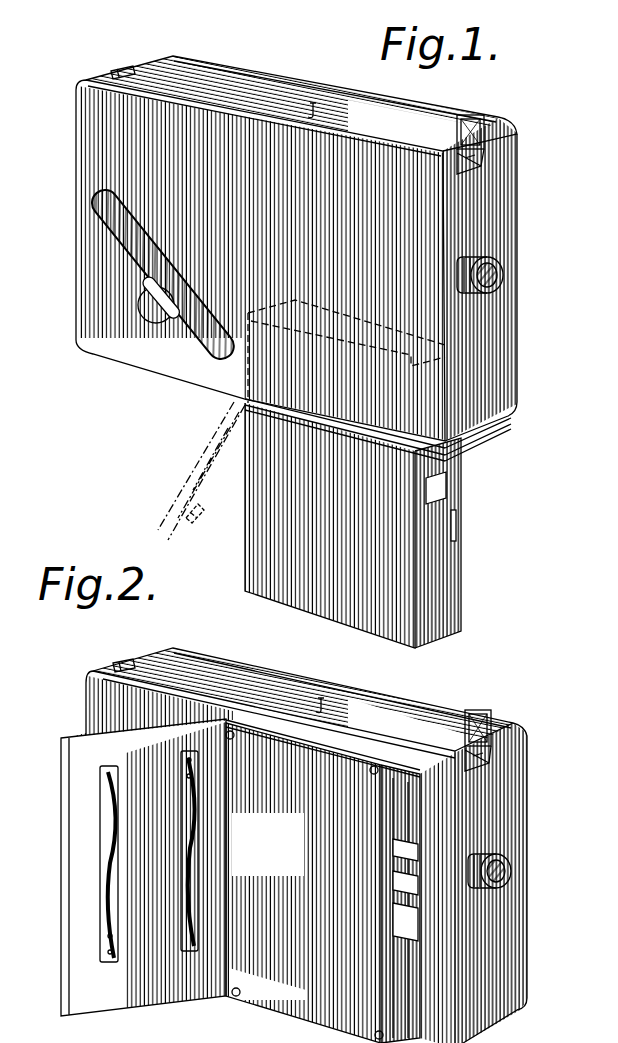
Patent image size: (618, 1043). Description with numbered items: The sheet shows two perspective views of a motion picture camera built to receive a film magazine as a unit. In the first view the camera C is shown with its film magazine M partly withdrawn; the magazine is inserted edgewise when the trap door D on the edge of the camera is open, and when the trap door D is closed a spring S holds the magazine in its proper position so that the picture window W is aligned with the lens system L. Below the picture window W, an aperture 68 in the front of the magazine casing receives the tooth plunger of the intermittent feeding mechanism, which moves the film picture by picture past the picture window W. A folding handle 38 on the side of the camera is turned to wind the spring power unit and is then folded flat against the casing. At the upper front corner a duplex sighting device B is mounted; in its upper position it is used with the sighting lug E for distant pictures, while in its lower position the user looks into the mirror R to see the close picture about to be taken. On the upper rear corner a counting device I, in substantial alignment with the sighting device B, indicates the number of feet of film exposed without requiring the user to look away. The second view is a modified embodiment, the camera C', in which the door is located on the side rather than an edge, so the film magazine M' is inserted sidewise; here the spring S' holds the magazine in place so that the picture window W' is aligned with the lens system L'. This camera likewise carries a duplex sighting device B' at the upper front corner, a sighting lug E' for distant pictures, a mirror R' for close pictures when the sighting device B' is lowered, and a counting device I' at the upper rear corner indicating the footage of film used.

In FIG. 1, the motion picture camera C is at (277, 258).
In FIG. 1, the handle 38 is at (170, 265).
In FIG. 1, the counting device I is at (117, 59).
In FIG. 1, the sighting lug E is at (329, 114).
In FIG. 1, the duplex sighting device B is at (470, 118).
In FIG. 1, the mirror R is at (505, 172).
In FIG. 1, the lens system L is at (507, 285).
In FIG. 1, the film magazine M is at (376, 525).
In FIG. 1, the picture window W is at (468, 488).
In FIG. 1, the aperture 68 is at (449, 520).
In FIG. 1, the trap door D is at (200, 456).
In FIG. 2, the trap door D is at (130, 997).
In FIG. 1, the spring S is at (206, 530).
In FIG. 2, the camera C' is at (286, 845).
In FIG. 2, the counting device I' is at (128, 646).
In FIG. 2, the sighting lug E' is at (341, 711).
In FIG. 2, the duplex sighting device B' is at (486, 710).
In FIG. 2, the mirror R' is at (518, 767).
In FIG. 2, the lens system L' is at (519, 861).
In FIG. 2, the spring S' is at (149, 856).
In FIG. 2, the film magazine M' is at (323, 883).
In FIG. 2, the picture window W' is at (367, 890).